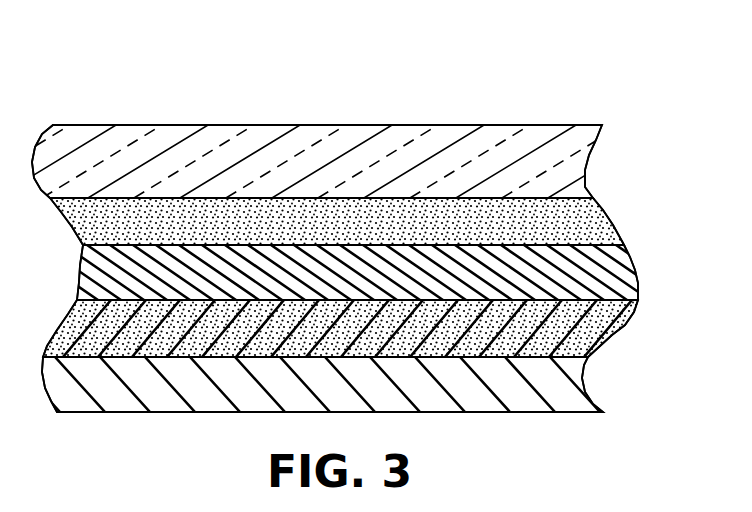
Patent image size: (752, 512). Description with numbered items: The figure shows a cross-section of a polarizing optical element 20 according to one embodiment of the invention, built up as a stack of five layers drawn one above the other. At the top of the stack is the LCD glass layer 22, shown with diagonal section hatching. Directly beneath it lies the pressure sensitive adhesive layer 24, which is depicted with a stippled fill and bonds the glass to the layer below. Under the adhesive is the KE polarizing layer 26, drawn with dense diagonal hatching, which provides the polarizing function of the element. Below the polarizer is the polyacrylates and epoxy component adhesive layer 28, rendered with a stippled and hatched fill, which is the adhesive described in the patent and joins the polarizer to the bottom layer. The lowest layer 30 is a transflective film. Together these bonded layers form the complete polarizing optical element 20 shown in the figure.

The polarizing optical element 20 is at (527, 114).
The LCD glass layer 22 is at (578, 165).
The pressure sensitive adhesive layer 24 is at (600, 227).
The KE polarizing layer 26 is at (613, 275).
The polyacrylates and epoxy component adhesive layer 28 is at (610, 330).
The transflective film 30 is at (580, 385).